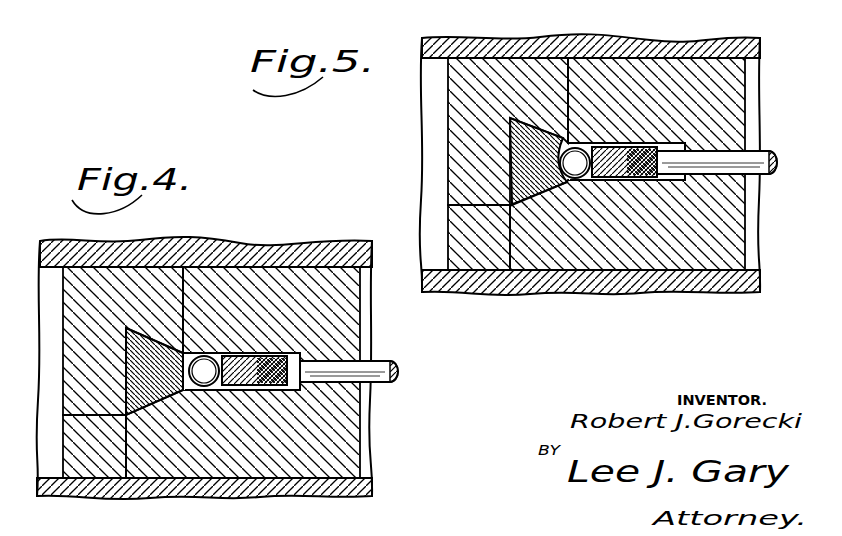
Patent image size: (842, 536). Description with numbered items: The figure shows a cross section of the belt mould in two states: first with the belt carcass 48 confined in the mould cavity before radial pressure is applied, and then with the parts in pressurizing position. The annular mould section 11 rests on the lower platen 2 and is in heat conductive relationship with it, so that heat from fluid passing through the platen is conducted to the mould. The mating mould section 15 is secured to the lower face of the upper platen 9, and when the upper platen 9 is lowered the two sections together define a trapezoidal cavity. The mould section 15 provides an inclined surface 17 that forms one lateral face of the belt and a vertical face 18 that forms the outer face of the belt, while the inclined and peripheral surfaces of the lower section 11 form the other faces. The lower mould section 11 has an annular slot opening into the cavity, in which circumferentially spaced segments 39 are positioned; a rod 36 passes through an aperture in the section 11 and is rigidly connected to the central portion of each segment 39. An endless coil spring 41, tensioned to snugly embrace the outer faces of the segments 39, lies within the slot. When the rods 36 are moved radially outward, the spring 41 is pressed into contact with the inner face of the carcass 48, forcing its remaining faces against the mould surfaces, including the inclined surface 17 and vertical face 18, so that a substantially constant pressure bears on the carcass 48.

In FIG. 4, the lower platen 2 is at (141, 488).
In FIG. 5, the lower platen 2 is at (697, 284).
In FIG. 4, the upper platen 9 is at (303, 252).
In FIG. 5, the upper platen 9 is at (727, 44).
In FIG. 4, the annular mould section 11 is at (323, 288).
In FIG. 5, the annular mould section 11 is at (675, 70).
In FIG. 4, the mould section 15 is at (122, 282).
In FIG. 5, the mould section 15 is at (466, 123).
In FIG. 5, the inclined surface 17 is at (527, 116).
In FIG. 4, the vertical face 18 is at (95, 410).
In FIG. 5, the vertical face 18 is at (492, 247).
In FIG. 4, the rod 36 is at (384, 363).
In FIG. 5, the rod 36 is at (767, 153).
In FIG. 4, the segment 39 is at (248, 380).
In FIG. 5, the segment 39 is at (613, 170).
In FIG. 4, the endless coil spring 41 is at (213, 357).
In FIG. 5, the endless coil spring 41 is at (587, 143).
In FIG. 4, the carcass 48 is at (168, 343).